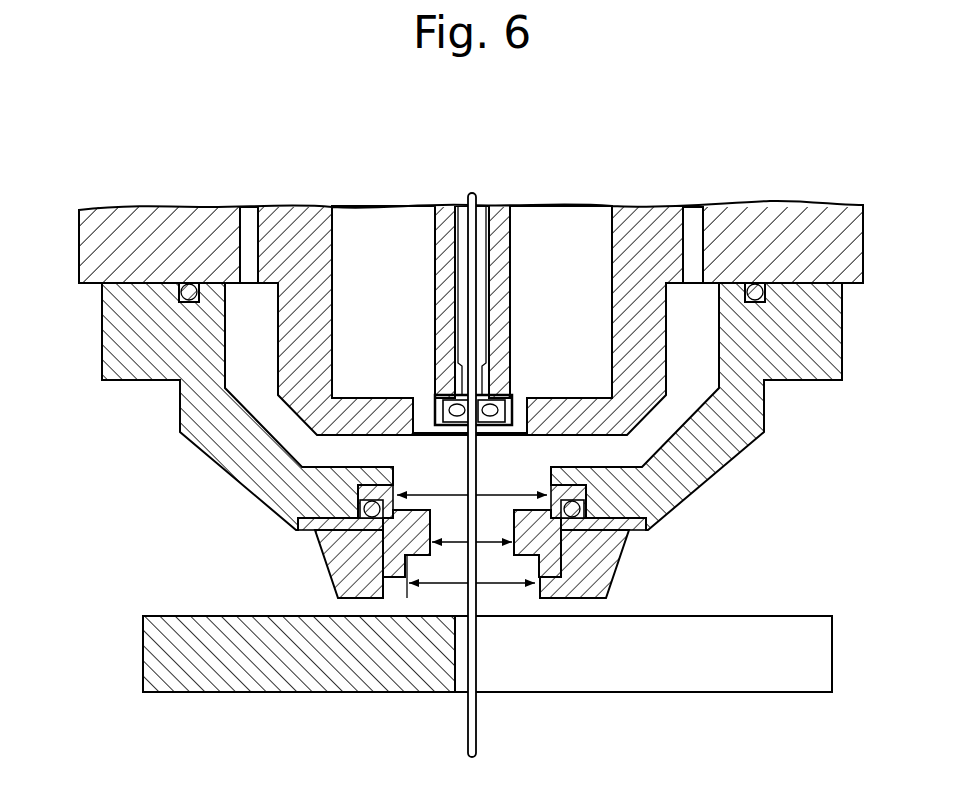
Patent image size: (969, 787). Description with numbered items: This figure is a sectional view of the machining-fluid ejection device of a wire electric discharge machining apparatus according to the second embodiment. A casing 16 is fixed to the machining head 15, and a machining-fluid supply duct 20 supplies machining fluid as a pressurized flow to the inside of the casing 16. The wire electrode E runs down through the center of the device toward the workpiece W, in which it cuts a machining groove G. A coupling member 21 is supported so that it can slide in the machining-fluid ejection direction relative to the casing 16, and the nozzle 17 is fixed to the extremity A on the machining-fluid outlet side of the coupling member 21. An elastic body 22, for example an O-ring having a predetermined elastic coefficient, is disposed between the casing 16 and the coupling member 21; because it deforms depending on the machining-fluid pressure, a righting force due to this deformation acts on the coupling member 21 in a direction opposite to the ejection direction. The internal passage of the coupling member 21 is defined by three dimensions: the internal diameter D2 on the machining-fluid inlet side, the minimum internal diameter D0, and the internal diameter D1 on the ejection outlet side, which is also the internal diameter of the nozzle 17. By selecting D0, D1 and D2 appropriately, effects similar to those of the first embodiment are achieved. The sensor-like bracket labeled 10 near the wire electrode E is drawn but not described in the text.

The machining head 15 is at (87, 250).
The casing 16 is at (180, 415).
The machining-fluid supply duct 20 is at (250, 213).
The sensor 10 is at (497, 400).
The elastic body 22 is at (586, 503).
The coupling member 21 is at (562, 543).
The nozzle 17 is at (340, 565).
The extremity on the machining-fluid outlet side of the coupling member A is at (393, 578).
The minimum internal diameter of the coupling member D0 is at (472, 529).
The internal diameter on the machining-fluid ejection outlet side D1 is at (472, 571).
The internal diameter on the machining-fluid inlet side D2 is at (472, 482).
The workpiece W is at (150, 650).
The wire electrode E is at (467, 728).
The machining groove G is at (540, 678).